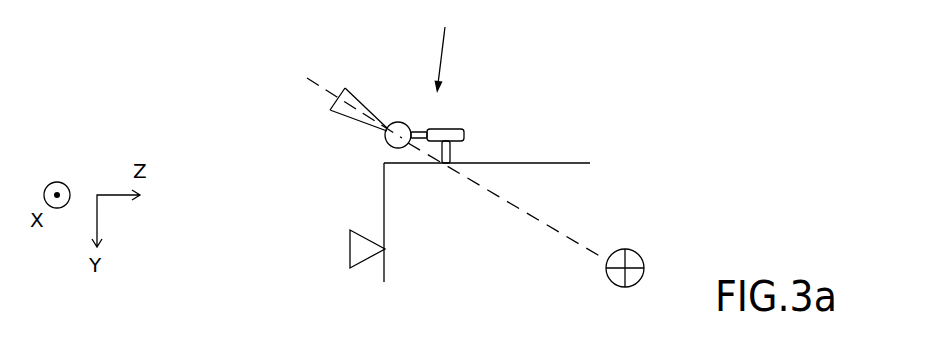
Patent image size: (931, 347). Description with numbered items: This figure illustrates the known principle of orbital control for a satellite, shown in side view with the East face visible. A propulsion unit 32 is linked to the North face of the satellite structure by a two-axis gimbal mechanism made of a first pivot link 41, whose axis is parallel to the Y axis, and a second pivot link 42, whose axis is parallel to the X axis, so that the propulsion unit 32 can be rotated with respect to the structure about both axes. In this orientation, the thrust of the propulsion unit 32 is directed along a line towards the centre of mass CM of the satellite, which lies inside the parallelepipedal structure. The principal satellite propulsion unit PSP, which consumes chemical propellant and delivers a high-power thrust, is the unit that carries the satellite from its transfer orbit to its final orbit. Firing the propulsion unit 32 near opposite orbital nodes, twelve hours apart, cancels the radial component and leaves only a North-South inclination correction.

The propulsion unit 32 is at (343, 87).
The second pivot link 42 is at (397, 122).
The first pivot link 41 is at (442, 129).
The centre of mass CM is at (642, 255).
The principal satellite propulsion unit PSP is at (350, 250).